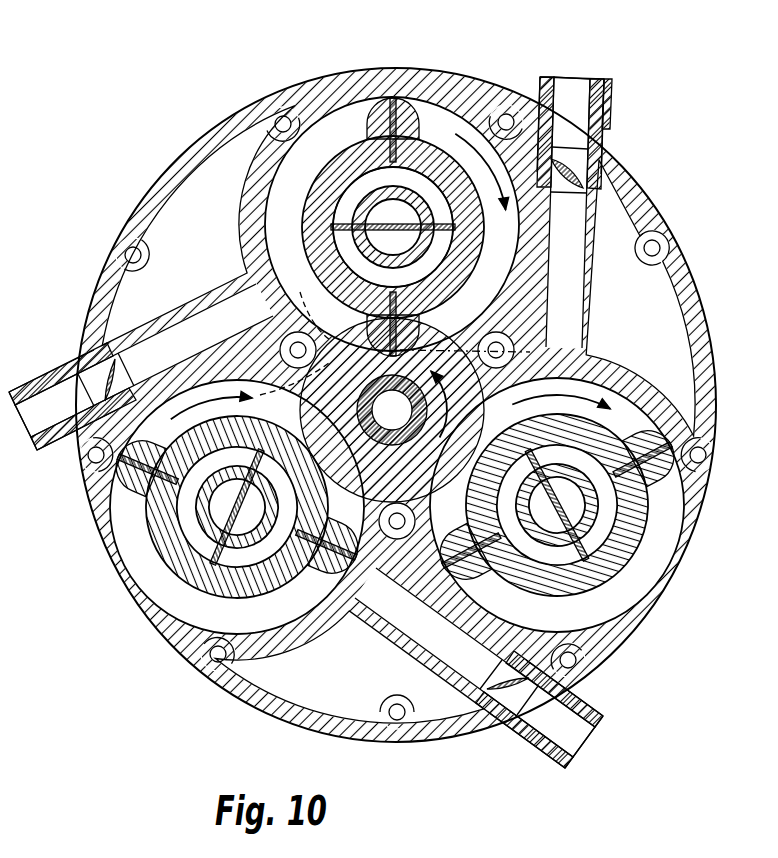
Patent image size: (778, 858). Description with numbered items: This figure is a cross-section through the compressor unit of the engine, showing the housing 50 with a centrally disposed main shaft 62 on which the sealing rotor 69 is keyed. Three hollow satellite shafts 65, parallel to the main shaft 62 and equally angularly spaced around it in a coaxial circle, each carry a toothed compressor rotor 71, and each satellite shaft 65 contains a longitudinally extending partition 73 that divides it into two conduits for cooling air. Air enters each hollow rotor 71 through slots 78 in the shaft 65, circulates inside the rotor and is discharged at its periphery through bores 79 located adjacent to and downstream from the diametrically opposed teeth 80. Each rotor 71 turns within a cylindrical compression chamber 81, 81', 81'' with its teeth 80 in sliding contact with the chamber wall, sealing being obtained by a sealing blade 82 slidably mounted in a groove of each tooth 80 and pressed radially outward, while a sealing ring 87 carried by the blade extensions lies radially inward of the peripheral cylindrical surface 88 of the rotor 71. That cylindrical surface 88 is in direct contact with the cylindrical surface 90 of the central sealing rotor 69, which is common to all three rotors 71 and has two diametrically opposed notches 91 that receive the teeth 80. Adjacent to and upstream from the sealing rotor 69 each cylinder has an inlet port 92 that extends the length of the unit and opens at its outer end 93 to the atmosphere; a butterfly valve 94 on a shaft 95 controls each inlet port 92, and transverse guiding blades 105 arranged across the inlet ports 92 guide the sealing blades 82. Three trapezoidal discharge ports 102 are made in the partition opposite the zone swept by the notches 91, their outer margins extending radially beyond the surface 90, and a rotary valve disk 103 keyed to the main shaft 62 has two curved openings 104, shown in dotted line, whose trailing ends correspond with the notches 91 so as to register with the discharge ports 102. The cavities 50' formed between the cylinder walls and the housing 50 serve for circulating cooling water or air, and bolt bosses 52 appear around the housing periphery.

The housing 50 is at (389, 429).
The cavities 50' is at (198, 226).
The bolt hole boss 52 is at (668, 240).
The main shaft 62 is at (340, 332).
The satellite shafts 65 is at (192, 575).
The sealing rotor 69 is at (508, 390).
The toothed rotor 71 is at (638, 532).
The partition 73 is at (228, 510).
The slots 78 is at (160, 523).
The bores 79 is at (393, 216).
The teeth 80 is at (414, 84).
The compression chamber 81 is at (392, 190).
The compression chamber 81' is at (557, 518).
The compression chamber 81'' is at (202, 507).
The sealing blade 82 is at (401, 95).
The sealing ring 87 is at (368, 196).
The peripheral cylindrical surface 88 is at (366, 203).
The cylindrical surface 90 is at (515, 412).
The notches 91 is at (378, 507).
The inlet port 92 is at (577, 286).
The outer end 93 is at (603, 91).
The butterfly valves 94 is at (570, 152).
The shaft 95 is at (583, 176).
The discharge ports 102 is at (429, 318).
The rotary valve disk 103 is at (505, 322).
The openings 104 is at (270, 398).
The guiding blades 105 is at (372, 590).